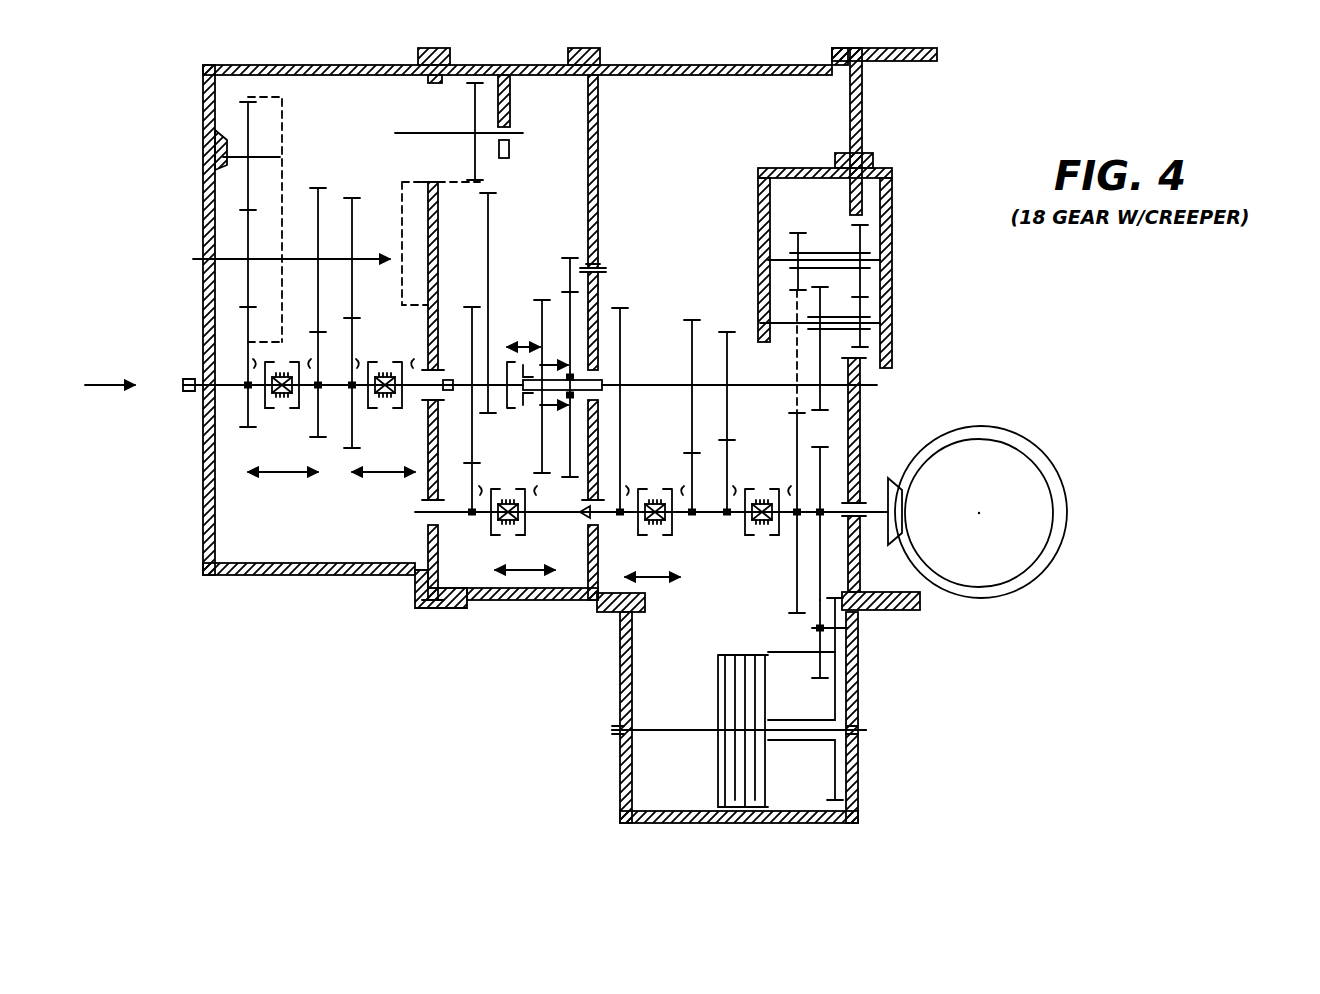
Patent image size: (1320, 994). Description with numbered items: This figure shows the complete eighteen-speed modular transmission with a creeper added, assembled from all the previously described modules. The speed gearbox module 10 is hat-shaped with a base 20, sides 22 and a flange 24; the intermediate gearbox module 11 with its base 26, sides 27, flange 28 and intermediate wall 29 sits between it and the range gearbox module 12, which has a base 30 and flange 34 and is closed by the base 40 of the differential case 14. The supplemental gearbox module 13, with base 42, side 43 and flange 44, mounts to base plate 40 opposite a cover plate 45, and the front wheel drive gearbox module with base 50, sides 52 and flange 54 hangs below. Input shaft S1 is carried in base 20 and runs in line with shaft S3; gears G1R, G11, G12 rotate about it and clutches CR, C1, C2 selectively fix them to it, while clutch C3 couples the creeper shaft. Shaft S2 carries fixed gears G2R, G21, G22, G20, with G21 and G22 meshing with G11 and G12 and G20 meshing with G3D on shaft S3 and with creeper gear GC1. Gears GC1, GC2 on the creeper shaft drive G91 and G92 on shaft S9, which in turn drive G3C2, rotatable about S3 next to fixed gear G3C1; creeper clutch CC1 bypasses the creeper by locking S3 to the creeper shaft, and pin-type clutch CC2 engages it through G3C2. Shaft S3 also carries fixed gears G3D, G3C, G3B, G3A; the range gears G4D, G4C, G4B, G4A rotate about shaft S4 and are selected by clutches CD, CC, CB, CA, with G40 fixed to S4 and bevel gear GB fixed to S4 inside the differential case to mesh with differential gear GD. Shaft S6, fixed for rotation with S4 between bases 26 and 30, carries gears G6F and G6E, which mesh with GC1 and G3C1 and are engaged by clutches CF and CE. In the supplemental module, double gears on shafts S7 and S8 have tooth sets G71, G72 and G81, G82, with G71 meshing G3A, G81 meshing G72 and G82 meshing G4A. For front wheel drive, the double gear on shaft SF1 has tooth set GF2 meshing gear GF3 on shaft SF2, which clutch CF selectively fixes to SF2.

The speed gearbox module 10 is at (195, 605).
The intermediate gearbox module 11 is at (512, 56).
The range gearbox module 12 is at (745, 50).
The supplemental gearbox module 13 is at (753, 158).
The differential case 14 is at (925, 102).
The base 20 is at (203, 520).
The sides 22 is at (224, 65).
The flange 24 is at (418, 58).
The base 26 is at (434, 602).
The sides 27 is at (453, 78).
The flange 28 is at (570, 48).
The intermediate wall 29 is at (510, 112).
The base 30 is at (598, 113).
The flange 34 is at (832, 55).
The base 40 is at (862, 92).
The base 42 is at (758, 235).
The side 43 is at (805, 168).
The flange 44 is at (840, 154).
The cover plate 45 is at (892, 196).
The base 50 is at (663, 812).
The sides 52 is at (620, 778).
The flange 54 is at (620, 636).
The shaft S1 is at (190, 388).
The shaft S2 is at (193, 262).
The shaft S3 is at (878, 385).
The shaft S4 is at (870, 505).
The shaft S6 is at (417, 515).
The shaft S7 is at (882, 320).
The shaft S8 is at (882, 260).
The shaft S9 is at (600, 268).
The shaft SF1 is at (847, 633).
The shaft SF2 is at (865, 730).
The gear G1R is at (282, 98).
The gear G2R is at (248, 232).
The gear G11 is at (320, 442).
The gear G12 is at (343, 452).
The gear G20 is at (475, 165).
The gear G21 is at (322, 170).
The gear G22 is at (352, 198).
The gear G91 is at (490, 195).
The gear G92 is at (572, 258).
The gear GC1 is at (472, 318).
The gear GC2 is at (488, 413).
The gear G3A is at (858, 410).
The gear G3B is at (727, 420).
The gear G3C is at (692, 343).
The gear G3D is at (620, 332).
The gear G3C1 is at (544, 298).
The gear G3C2 is at (598, 300).
The gear G4A is at (797, 613).
The gear G4B is at (727, 455).
The gear G4C is at (695, 575).
The gear G4D is at (620, 450).
The gear G6E is at (590, 595).
The gear G6F is at (440, 543).
The gear tooth set G71 is at (805, 347).
The gear tooth set G72 is at (862, 340).
The gear tooth set G81 is at (862, 240).
The gear tooth set G82 is at (803, 245).
The front drive gear GA is at (818, 655).
The bevel gear GB is at (905, 495).
The differential gear GD is at (1061, 470).
The gear tooth set GF2 is at (837, 657).
The gear GF3 is at (833, 708).
The gear G40 is at (858, 558).
The clutch C1 is at (293, 410).
The clutch C2 is at (385, 362).
The clutch C3 is at (398, 410).
The clutch CA is at (779, 538).
The clutch CB is at (760, 493).
The clutch CC is at (672, 538).
The clutch CD is at (653, 490).
The clutch CE is at (524, 538).
The clutch CF is at (718, 708).
The clutch CR is at (270, 342).
The creeper clutch CC1 is at (513, 360).
The creeper clutch CC2 is at (476, 465).